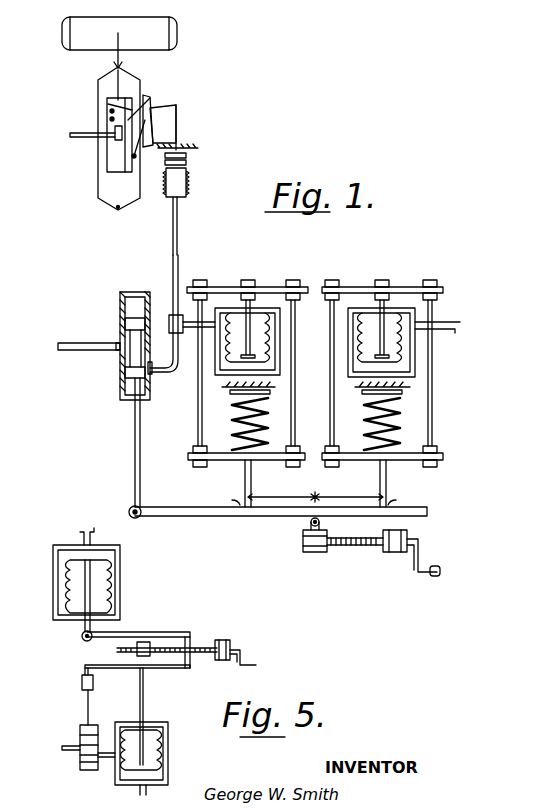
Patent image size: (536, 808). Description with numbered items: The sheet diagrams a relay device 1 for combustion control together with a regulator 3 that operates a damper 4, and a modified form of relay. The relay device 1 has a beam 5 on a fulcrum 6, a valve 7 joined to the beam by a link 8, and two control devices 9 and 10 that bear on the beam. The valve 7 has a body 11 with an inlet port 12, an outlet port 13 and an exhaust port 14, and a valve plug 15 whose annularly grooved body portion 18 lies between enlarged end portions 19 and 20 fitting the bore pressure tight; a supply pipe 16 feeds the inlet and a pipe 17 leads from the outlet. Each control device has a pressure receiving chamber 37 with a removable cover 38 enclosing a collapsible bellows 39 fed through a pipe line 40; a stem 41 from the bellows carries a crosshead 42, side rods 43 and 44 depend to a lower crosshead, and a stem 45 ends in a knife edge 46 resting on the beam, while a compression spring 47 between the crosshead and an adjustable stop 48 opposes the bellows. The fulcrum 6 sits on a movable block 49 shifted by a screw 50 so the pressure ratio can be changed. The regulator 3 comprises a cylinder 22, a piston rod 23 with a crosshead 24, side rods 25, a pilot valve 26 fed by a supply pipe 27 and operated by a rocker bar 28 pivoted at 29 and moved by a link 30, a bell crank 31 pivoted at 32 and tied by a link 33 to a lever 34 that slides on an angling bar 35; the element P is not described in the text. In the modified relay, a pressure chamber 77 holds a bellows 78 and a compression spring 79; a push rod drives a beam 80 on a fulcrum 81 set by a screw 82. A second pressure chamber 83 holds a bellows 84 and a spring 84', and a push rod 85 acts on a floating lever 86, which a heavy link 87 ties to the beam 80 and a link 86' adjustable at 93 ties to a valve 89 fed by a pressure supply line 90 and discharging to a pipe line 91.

In FIG. 1, the relay device 1 is at (342, 255).
In FIG. 1, the regulator 3 is at (52, 96).
In FIG. 1, the damper 4 is at (100, 42).
In FIG. 1, the beam 5 is at (260, 515).
In FIG. 1, the fulcrum 6 is at (320, 522).
In FIG. 1, the valve 7 is at (80, 323).
In FIG. 1, the link 8 is at (130, 466).
In FIG. 1, the control device 9 is at (402, 283).
In FIG. 1, the control device 10 is at (228, 284).
In FIG. 1, the body 11 is at (122, 392).
In FIG. 1, the inlet port 12 is at (120, 348).
In FIG. 1, the outlet port 13 is at (154, 372).
In FIG. 1, the exhaust port 14 is at (135, 416).
In FIG. 1, the valve plug 15 is at (134, 313).
In FIG. 1, the supply pipe 16 is at (68, 350).
In FIG. 1, the pipe 17 is at (178, 267).
In FIG. 1, the annularly grooved body portion 18 is at (141, 344).
In FIG. 1, the enlarged end portion 19 is at (125, 326).
In FIG. 1, the enlarged end portion 20 is at (125, 372).
In FIG. 1, the cylinder 22 is at (128, 169).
In FIG. 1, the piston rod 23 is at (125, 103).
In FIG. 1, the crosshead 24 is at (122, 70).
In FIG. 1, the side rods 25 is at (98, 170).
In FIG. 1, the pilot valve 26 is at (107, 146).
In FIG. 1, the supply pipe 27 is at (79, 135).
In FIG. 1, the rocker bar 28 is at (152, 108).
In FIG. 1, the pivot 29 is at (120, 98).
In FIG. 1, the link 30 is at (178, 118).
In FIG. 1, the bell crank 31 is at (112, 119).
In FIG. 1, the pivot 32 is at (110, 111).
In FIG. 1, the link 33 is at (165, 110).
In FIG. 1, the lever 34 is at (150, 100).
In FIG. 1, the angling bar 35 is at (146, 97).
In FIG. 1, the pressure receiving chamber 37 is at (270, 372).
In FIG. 1, the removable cover 38 is at (270, 308).
In FIG. 1, the collapsible diaphragm or bellows 39 is at (362, 340).
In FIG. 1, the pipe line 40 is at (442, 333).
In FIG. 5, the pipe line 40 is at (112, 533).
In FIG. 1, the stem 41 is at (252, 336).
In FIG. 1, the crosshead 42 is at (260, 290).
In FIG. 1, the side rod 43 is at (197, 428).
In FIG. 1, the side rod 44 is at (292, 412).
In FIG. 1, the stem 45 is at (252, 478).
In FIG. 1, the knife edge 46 is at (232, 500).
In FIG. 1, the compression spring 47 is at (236, 424).
In FIG. 1, the adjustable stop 48 is at (232, 394).
In FIG. 1, the movable block 49 is at (318, 552).
In FIG. 1, the screw 50 is at (286, 560).
In FIG. 1, the solenoid P is at (205, 193).
In FIG. 5, the pressure chamber 77 is at (120, 553).
In FIG. 5, the collapsible diaphragm or bellows 78 is at (108, 578).
In FIG. 5, the compression spring 79 is at (92, 592).
In FIG. 5, the beam 80 is at (176, 632).
In FIG. 5, the fulcrum 81 is at (144, 642).
In FIG. 5, the screw 82 is at (220, 641).
In FIG. 5, the pressure chamber 83 is at (168, 770).
In FIG. 5, the bellows or collapsible diaphragm 84 is at (161, 750).
In FIG. 5, the compression spring 84' is at (177, 728).
In FIG. 5, the push rod 85 is at (144, 706).
In FIG. 5, the floating lever 86 is at (137, 682).
In FIG. 5, the link 86' is at (67, 705).
In FIG. 1, the heavy link 87 is at (411, 553).
In FIG. 5, the heavy link 87 is at (192, 660).
In FIG. 5, the valve 89 is at (80, 736).
In FIG. 5, the pressure supply line 90 is at (74, 749).
In FIG. 5, the pipe line 91 is at (140, 790).
In FIG. 5, the adjustment 93 is at (82, 672).